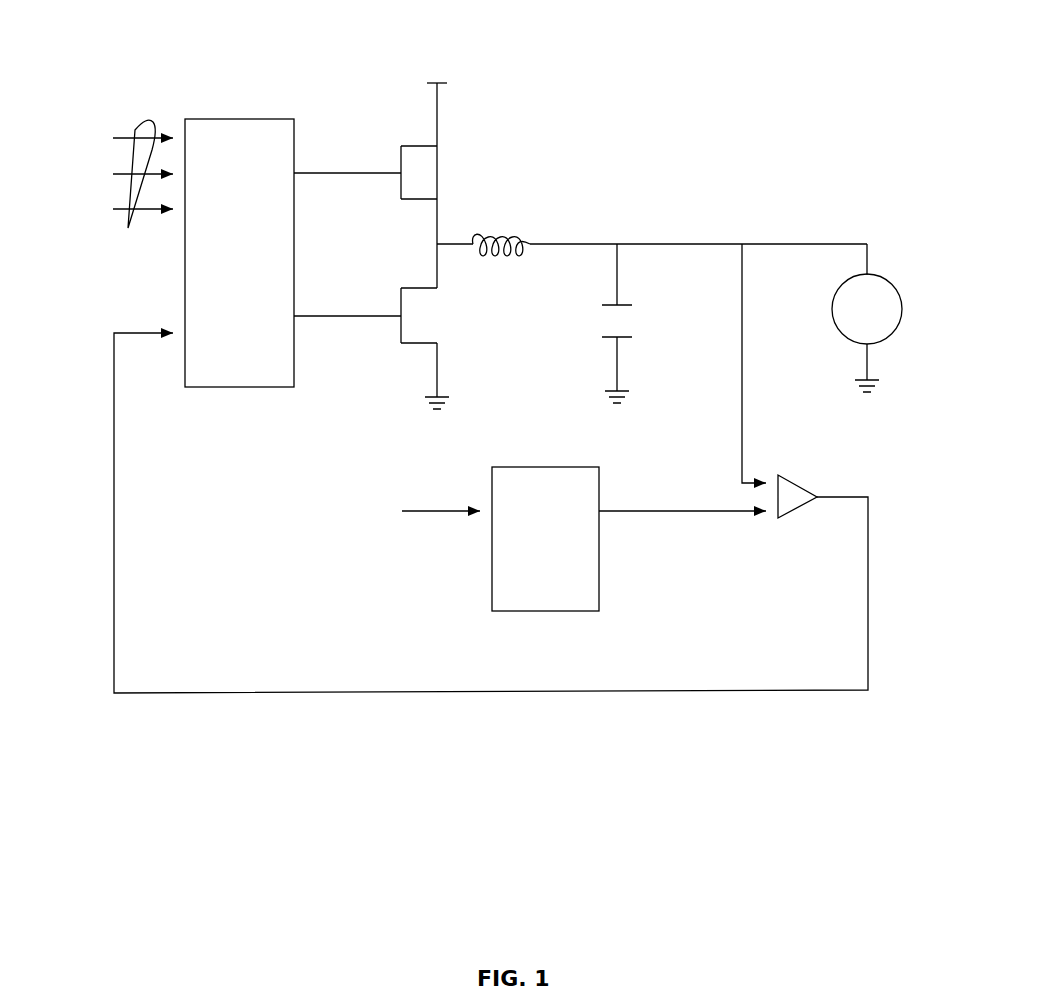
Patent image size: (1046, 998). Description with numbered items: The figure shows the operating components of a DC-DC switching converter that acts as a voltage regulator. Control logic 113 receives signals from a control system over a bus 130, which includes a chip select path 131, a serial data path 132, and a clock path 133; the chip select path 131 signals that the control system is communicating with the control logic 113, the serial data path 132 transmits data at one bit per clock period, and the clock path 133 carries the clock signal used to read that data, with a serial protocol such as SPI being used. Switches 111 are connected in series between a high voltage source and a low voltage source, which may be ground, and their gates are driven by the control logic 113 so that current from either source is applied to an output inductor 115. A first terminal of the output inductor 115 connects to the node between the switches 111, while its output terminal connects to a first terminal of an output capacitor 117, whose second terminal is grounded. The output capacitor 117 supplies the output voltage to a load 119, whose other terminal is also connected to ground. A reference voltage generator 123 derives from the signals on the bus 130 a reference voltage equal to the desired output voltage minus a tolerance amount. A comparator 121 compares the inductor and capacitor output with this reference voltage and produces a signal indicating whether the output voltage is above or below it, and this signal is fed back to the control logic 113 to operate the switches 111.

The switches 111 is at (446, 46).
The control logic 113 is at (240, 117).
The output inductor 115 is at (497, 233).
The output capacitor 117 is at (622, 303).
The load 119 is at (897, 290).
The comparator 121 is at (797, 483).
The reference voltage generator 123 is at (548, 465).
The bus 130 is at (135, 130).
The chip select path 131 is at (120, 138).
The serial data path 132 is at (120, 174).
The clock path 133 is at (120, 209).